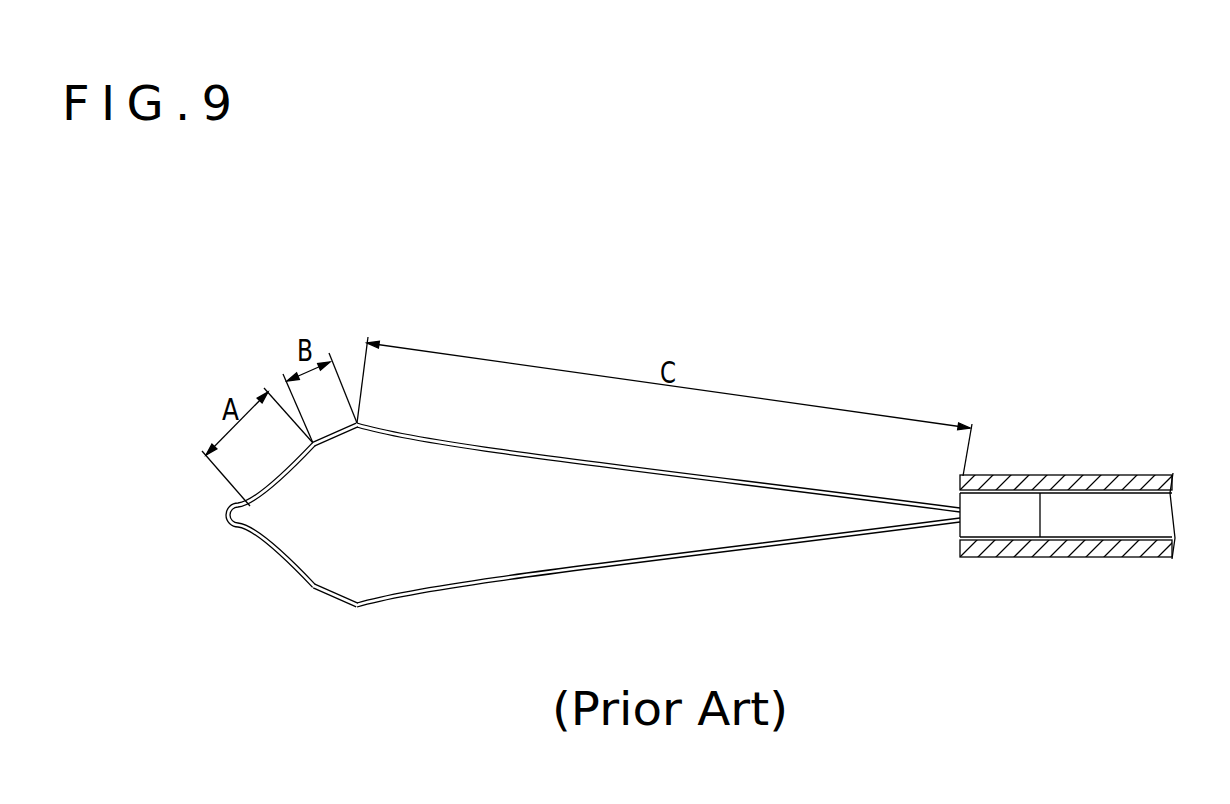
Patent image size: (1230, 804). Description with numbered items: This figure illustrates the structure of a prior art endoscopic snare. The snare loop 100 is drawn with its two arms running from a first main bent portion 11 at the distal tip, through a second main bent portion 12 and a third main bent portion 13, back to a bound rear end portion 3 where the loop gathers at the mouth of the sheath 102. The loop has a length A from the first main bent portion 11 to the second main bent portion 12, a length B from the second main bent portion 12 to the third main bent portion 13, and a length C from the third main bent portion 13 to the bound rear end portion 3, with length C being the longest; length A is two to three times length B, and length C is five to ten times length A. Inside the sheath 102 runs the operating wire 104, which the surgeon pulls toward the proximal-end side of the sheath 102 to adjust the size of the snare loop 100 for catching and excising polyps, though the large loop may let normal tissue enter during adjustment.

The snare loop 100 is at (876, 386).
The first main bent portion 11 is at (250, 502).
The second main bent portion 12 is at (318, 447).
The third main bent portion 13 is at (362, 421).
The bound rear end portion 3 is at (957, 529).
The sheath 102 is at (1078, 477).
The operating wire 104 is at (1147, 502).